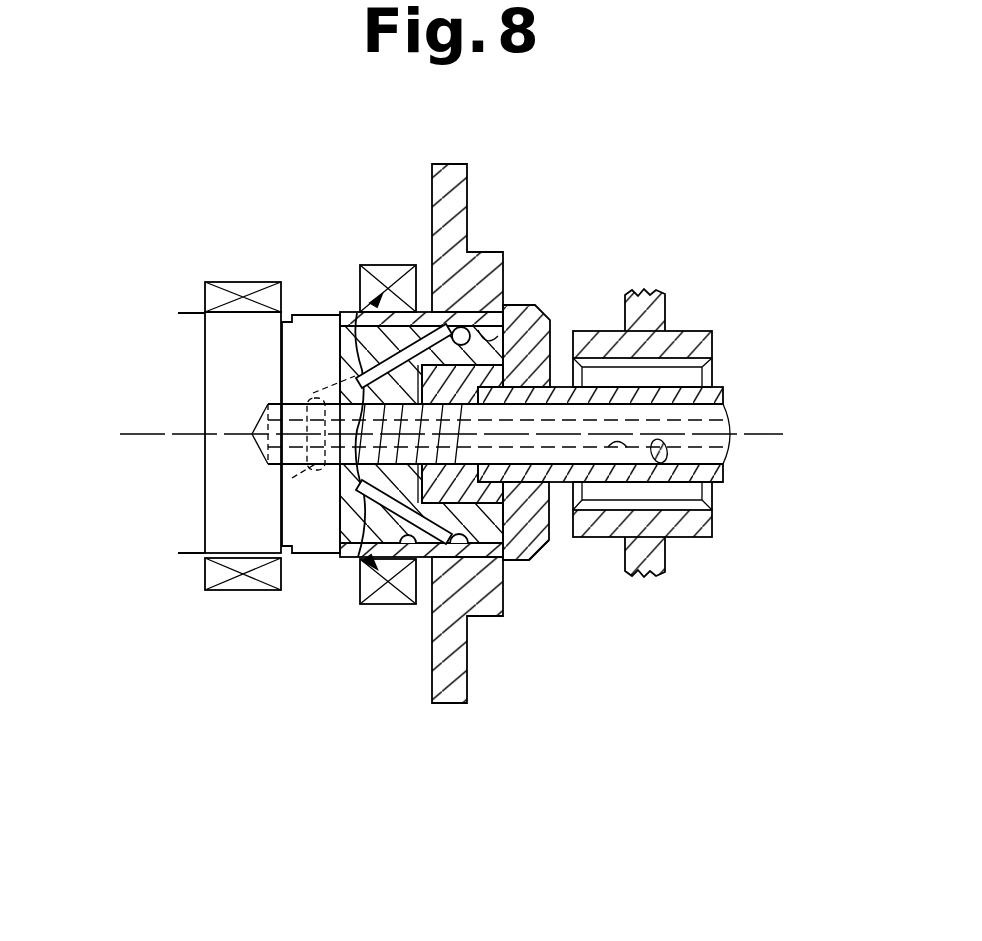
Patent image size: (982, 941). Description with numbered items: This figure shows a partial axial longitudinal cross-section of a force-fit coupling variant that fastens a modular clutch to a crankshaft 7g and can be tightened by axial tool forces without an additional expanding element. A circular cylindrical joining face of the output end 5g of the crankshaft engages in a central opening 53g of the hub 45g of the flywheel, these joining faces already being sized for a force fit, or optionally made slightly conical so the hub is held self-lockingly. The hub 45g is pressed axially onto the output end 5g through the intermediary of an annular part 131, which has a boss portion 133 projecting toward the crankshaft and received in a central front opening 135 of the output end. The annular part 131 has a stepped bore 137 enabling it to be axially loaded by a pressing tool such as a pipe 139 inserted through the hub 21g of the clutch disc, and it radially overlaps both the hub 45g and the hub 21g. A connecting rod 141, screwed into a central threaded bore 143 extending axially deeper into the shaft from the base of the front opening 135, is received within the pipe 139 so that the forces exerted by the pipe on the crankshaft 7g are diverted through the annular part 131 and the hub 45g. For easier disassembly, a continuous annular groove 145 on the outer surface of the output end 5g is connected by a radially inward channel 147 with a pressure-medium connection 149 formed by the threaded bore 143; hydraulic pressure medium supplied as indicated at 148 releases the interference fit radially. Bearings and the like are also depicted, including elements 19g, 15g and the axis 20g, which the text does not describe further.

The crankshaft 7g is at (217, 387).
The bearing 19g is at (248, 288).
The output end 5g is at (317, 325).
The bearing 15g is at (392, 276).
The hub 45g is at (456, 174).
The channel 147 is at (352, 320).
The boss portion 133 is at (362, 505).
The stepped bore 137 is at (437, 487).
The central threaded bore 143 is at (343, 455).
The central opening 53g is at (513, 330).
The annular groove 145 is at (466, 327).
The annular part 131 is at (540, 345).
The central front opening 135 is at (490, 490).
The connecting rod 141 is at (658, 422).
The pipe 139 is at (720, 470).
The pressure-medium connection 149 is at (345, 466).
The hub of the clutch disc 21g is at (698, 348).
The hydraulic pressure medium supply 148 is at (634, 450).
The axis 20g is at (137, 434).